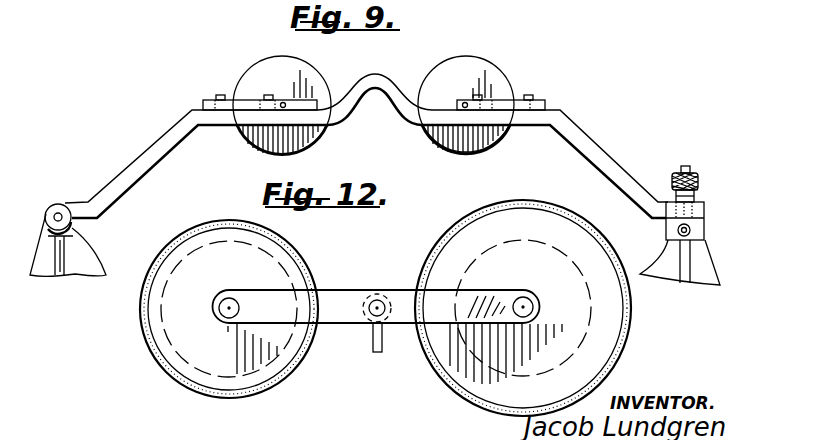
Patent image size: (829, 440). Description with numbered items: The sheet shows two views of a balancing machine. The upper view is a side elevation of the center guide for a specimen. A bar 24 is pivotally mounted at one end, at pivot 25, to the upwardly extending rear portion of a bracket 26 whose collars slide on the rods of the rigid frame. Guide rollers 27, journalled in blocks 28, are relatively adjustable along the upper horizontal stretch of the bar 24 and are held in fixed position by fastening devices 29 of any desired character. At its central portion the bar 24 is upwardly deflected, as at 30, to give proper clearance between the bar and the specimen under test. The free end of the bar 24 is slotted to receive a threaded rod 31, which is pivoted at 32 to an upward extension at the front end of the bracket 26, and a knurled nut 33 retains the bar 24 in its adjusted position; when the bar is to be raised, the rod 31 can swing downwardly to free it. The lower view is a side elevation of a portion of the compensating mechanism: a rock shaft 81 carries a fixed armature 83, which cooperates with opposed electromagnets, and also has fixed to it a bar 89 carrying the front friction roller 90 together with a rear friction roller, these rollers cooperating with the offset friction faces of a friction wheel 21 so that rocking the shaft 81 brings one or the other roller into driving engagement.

In FIG. 12, the wheel 21 is at (607, 342).
In FIG. 9, the bar 24 is at (168, 145).
In FIG. 9, the pivot 25 is at (58, 210).
In FIG. 9, the bracket 26 is at (88, 270).
In FIG. 9, the guide rollers 27 is at (297, 72).
In FIG. 9, the blocks 28 is at (244, 104).
In FIG. 9, the fastening devices 29 is at (220, 94).
In FIG. 9, the upwardly deflected portion 30 is at (382, 80).
In FIG. 9, the threaded rod 31 is at (691, 172).
In FIG. 9, the pivot 32 is at (700, 228).
In FIG. 9, the knurled nut 33 is at (700, 182).
In FIG. 12, the rock shaft 81 is at (384, 298).
In FIG. 12, the armature 83 is at (378, 355).
In FIG. 12, the bar 89 is at (352, 320).
In FIG. 12, the front friction roller 90 is at (205, 378).